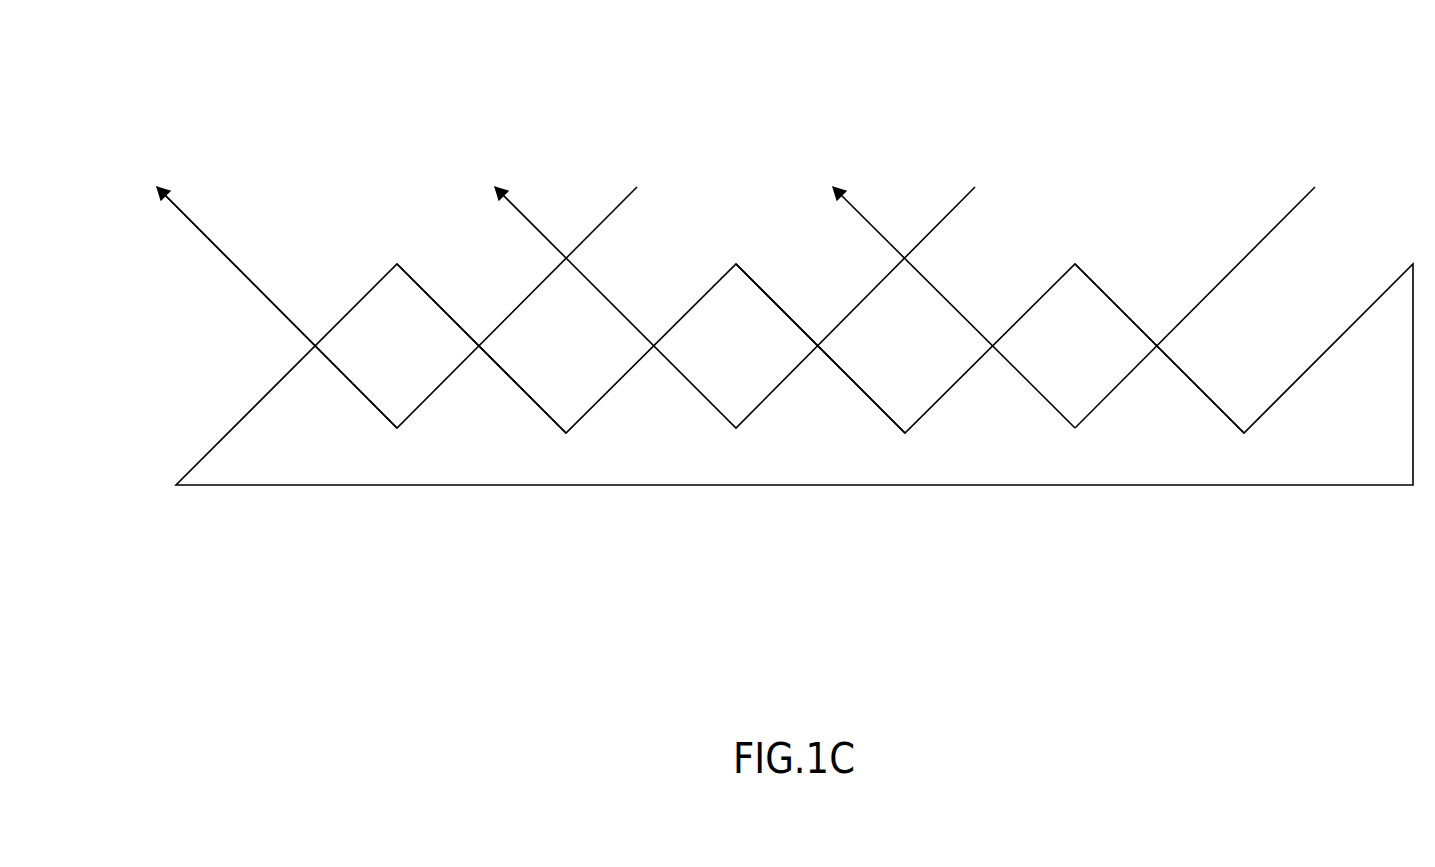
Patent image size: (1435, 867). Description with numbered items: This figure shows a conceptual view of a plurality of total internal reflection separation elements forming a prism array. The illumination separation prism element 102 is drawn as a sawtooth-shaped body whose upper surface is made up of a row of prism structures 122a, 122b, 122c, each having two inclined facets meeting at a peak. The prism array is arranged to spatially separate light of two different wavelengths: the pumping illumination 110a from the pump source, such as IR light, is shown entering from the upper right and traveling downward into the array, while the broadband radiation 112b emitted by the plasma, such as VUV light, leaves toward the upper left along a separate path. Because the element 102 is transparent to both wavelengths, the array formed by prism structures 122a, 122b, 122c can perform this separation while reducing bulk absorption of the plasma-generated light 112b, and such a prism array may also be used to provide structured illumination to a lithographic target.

The illumination separation prism element 102 is at (223, 89).
The broadband radiation emitted by the plasma 112b is at (232, 244).
The pumping illumination 110a is at (1223, 244).
The prism structure 122a is at (431, 296).
The prism structure 122b is at (770, 296).
The prism structure 122c is at (1110, 296).